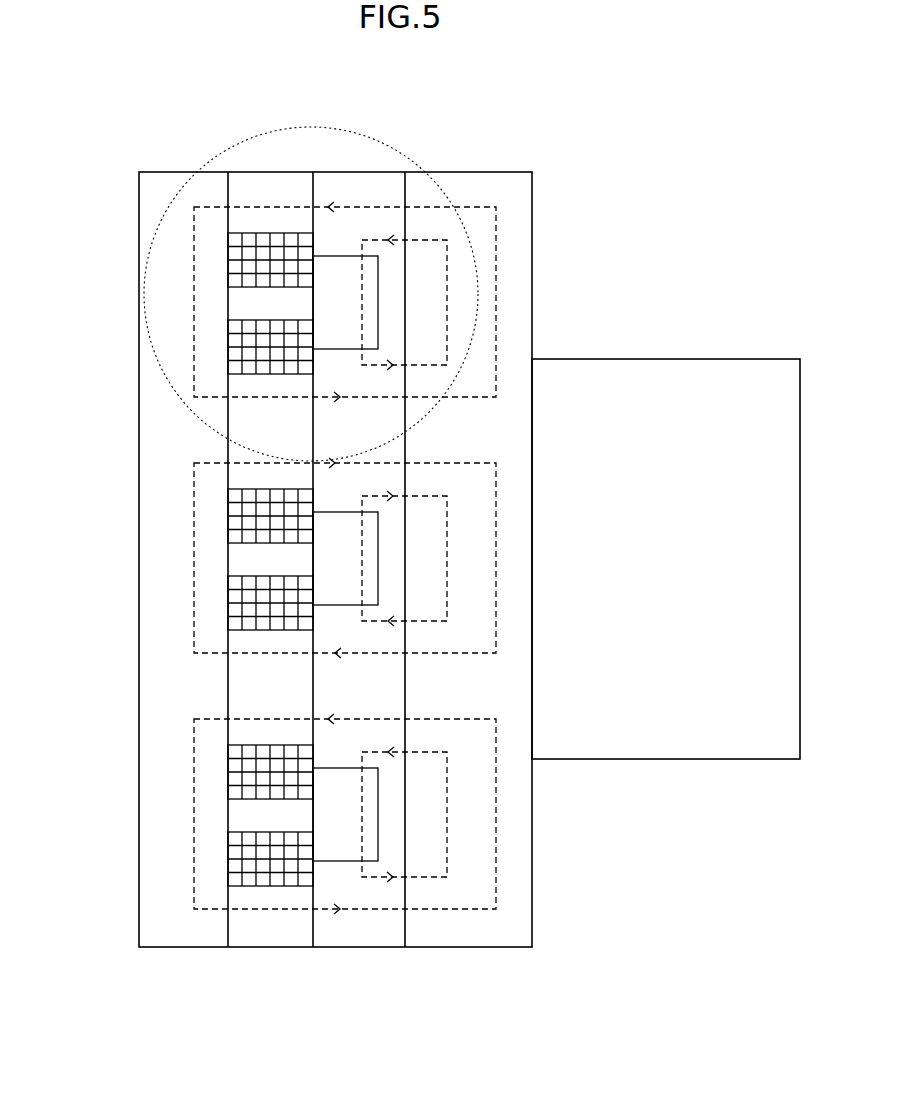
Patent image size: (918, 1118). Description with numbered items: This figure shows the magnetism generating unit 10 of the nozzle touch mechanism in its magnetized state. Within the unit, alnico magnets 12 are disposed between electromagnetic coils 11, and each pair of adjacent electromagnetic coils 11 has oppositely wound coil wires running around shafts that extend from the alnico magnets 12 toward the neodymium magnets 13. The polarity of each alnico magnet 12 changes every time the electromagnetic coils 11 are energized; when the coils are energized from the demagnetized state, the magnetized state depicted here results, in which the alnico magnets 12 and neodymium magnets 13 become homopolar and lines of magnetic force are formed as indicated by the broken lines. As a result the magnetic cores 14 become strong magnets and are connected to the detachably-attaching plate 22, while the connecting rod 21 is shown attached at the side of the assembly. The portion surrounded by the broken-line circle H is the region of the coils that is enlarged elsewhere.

The magnetism generating unit 10 is at (178, 964).
The electromagnetic coils 11 is at (188, 559).
The alnico magnets 12 is at (245, 431).
The neodymium magnets 13 is at (335, 253).
The magnetic cores 14 is at (370, 447).
The connecting rod 21 is at (697, 760).
The detachably-attaching plate 22 is at (465, 947).